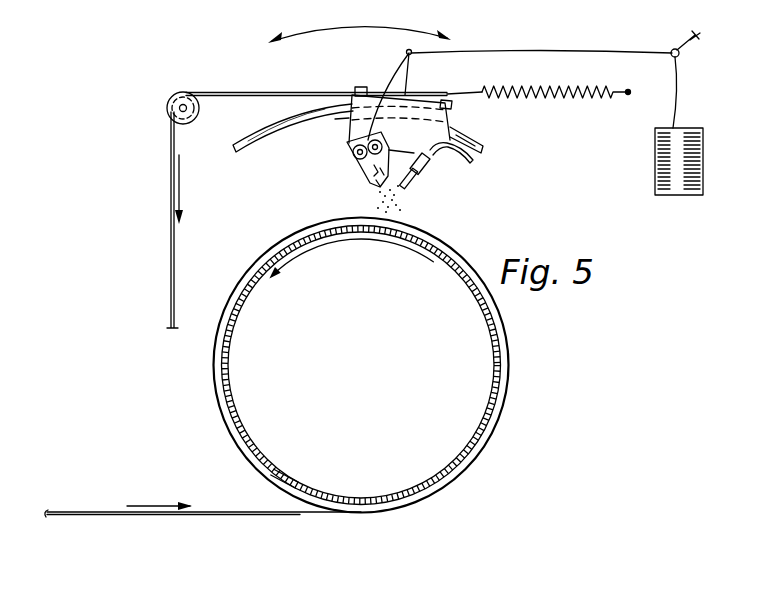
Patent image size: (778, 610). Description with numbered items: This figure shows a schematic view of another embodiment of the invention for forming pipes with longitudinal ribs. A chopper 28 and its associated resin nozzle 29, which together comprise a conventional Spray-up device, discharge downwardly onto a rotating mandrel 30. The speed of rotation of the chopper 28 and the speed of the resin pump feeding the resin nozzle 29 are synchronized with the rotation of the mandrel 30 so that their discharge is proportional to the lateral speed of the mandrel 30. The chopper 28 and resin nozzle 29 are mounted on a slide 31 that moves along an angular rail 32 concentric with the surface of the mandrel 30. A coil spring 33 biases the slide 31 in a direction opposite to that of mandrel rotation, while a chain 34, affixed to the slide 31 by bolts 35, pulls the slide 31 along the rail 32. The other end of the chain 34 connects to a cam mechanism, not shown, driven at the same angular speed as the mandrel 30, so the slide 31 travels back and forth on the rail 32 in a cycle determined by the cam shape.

The chopper 28 is at (362, 167).
The resin nozzle 29 is at (426, 181).
The mandrel 30 is at (490, 331).
The slide 31 is at (348, 128).
The angular rail 32 is at (258, 135).
The coil spring 33 is at (556, 103).
The chain 34 is at (236, 92).
The bolts 35 is at (455, 104).